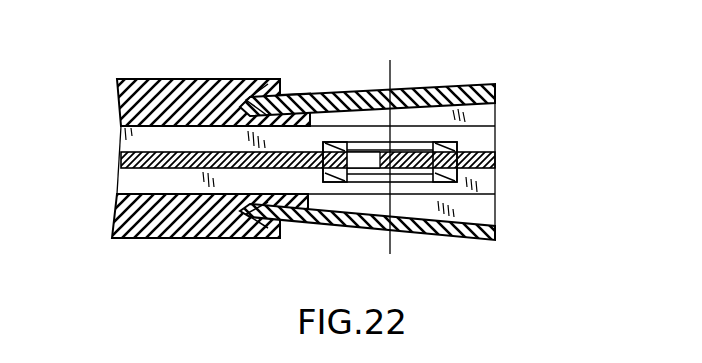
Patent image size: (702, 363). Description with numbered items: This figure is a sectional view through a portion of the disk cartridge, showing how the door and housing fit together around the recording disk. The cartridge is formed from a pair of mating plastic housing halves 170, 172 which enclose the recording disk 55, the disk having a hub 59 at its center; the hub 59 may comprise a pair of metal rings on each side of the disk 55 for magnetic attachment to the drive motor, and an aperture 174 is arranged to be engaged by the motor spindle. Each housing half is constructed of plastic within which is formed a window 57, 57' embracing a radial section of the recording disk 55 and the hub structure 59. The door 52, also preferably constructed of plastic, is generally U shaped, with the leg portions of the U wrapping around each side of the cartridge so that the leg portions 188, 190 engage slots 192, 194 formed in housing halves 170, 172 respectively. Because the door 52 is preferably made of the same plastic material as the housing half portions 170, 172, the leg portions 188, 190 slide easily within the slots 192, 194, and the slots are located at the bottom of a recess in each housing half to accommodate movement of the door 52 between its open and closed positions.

The door 52 is at (312, 223).
The recording disk 55 is at (155, 152).
The window 57 is at (334, 128).
The window 57' is at (376, 195).
The hub 59 is at (343, 142).
The housing half 170 is at (130, 78).
The housing half 172 is at (147, 238).
The aperture 174 is at (443, 90).
The leg portion 188 is at (288, 94).
The leg portion 190 is at (297, 222).
The slot 192 is at (245, 78).
The slot 194 is at (240, 238).